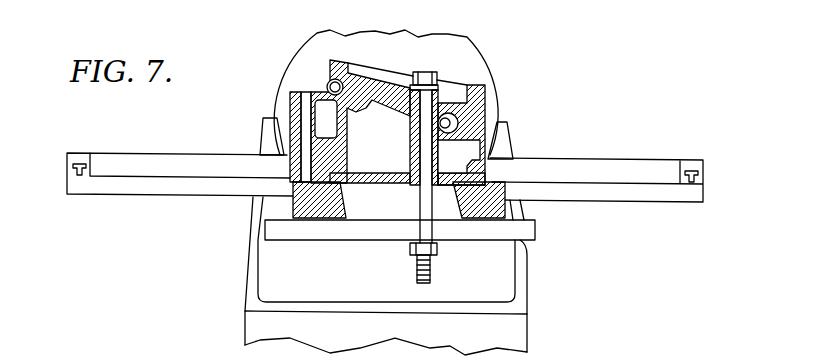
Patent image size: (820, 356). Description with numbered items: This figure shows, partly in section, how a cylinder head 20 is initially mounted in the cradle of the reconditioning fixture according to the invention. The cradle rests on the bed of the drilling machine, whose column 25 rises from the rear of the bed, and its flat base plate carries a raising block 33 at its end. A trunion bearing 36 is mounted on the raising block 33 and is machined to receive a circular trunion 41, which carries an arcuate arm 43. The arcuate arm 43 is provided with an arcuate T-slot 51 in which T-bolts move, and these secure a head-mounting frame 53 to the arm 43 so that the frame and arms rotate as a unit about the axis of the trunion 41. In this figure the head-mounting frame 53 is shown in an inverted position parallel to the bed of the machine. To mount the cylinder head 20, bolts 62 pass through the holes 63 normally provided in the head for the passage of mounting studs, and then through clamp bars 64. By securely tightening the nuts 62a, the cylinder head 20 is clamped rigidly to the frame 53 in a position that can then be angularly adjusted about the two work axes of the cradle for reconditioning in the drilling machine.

The cylinder head 20 is at (488, 105).
The trunion 41 is at (302, 64).
The bolt 62 is at (438, 80).
The nut 62a is at (410, 250).
The hole 63 is at (417, 145).
The T-slot 51 is at (72, 168).
The arcuate arm 43 is at (150, 188).
The head-mounting frame 53 is at (303, 204).
The clamp bar 64 is at (294, 232).
The trunion bearing 36 is at (527, 275).
The raising block 33 is at (527, 334).
The column 25 is at (666, 354).